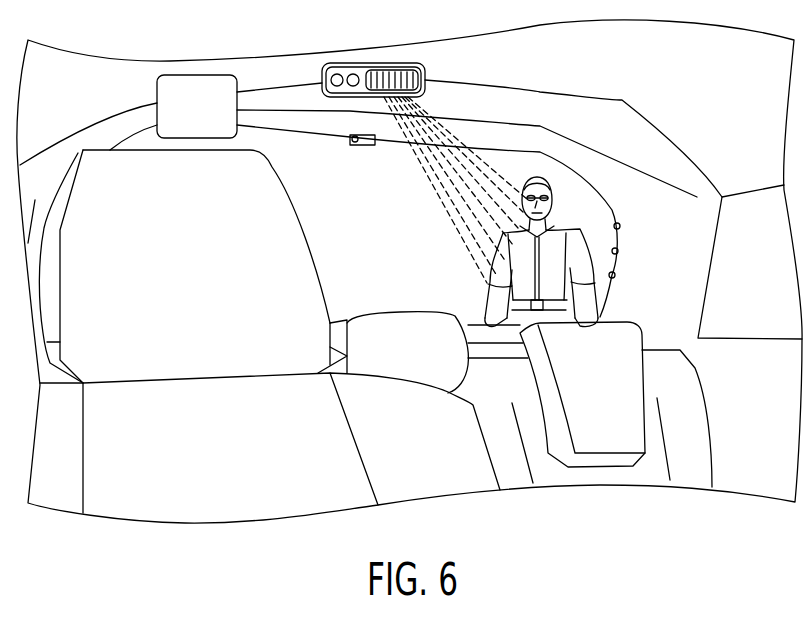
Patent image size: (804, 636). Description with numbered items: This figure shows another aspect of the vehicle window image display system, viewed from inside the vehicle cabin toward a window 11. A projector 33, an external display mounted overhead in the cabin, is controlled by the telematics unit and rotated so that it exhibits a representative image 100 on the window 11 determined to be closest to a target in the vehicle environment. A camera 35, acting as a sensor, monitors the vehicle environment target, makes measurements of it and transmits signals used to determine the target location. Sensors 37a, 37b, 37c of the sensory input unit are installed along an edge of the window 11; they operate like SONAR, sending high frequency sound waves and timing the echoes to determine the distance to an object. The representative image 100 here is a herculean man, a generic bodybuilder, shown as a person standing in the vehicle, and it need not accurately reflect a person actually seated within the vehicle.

The window 11 is at (308, 142).
The projector 33 is at (425, 70).
The camera 35 is at (363, 145).
The representative image 100 is at (558, 232).
The first ultrasonic sensor 37a is at (620, 224).
The second ultrasonic sensor 37b is at (618, 250).
The third ultrasonic sensor 37c is at (615, 276).